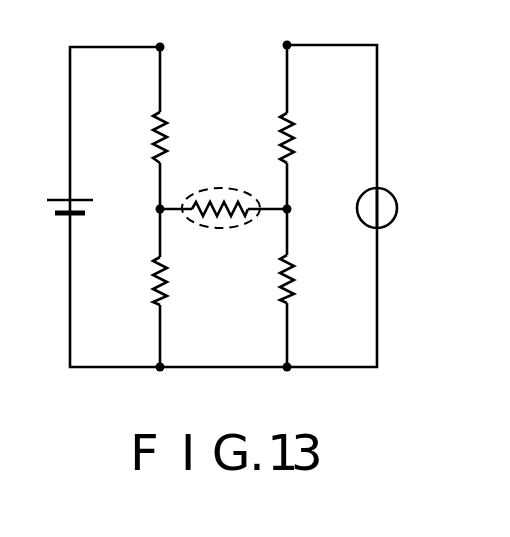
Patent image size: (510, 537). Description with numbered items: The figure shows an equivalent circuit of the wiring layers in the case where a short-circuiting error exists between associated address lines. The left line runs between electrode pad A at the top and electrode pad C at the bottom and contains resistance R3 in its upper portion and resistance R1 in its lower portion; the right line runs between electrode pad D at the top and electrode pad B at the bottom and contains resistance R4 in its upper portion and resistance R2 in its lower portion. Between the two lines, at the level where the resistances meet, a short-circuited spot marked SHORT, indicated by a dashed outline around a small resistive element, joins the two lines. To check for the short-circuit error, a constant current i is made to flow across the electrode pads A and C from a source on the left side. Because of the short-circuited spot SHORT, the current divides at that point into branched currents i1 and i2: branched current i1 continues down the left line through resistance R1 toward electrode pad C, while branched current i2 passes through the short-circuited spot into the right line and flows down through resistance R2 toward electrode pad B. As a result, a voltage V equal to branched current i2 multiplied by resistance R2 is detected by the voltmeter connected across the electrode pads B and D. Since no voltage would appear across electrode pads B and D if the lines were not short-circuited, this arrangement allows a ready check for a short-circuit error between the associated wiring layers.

The resistance R1 is at (140, 281).
The resistance R2 is at (306, 279).
The resistance R3 is at (138, 137).
The resistance R4 is at (306, 138).
The electrode pad A is at (159, 23).
The electrode pad B is at (289, 389).
The electrode pad C is at (161, 391).
The electrode pad D is at (286, 23).
The voltage V is at (377, 208).
The constant current i is at (125, 57).
The branched current i1 is at (147, 220).
The branched current i2 is at (225, 237).
The short-circuited spot SHORT is at (218, 188).